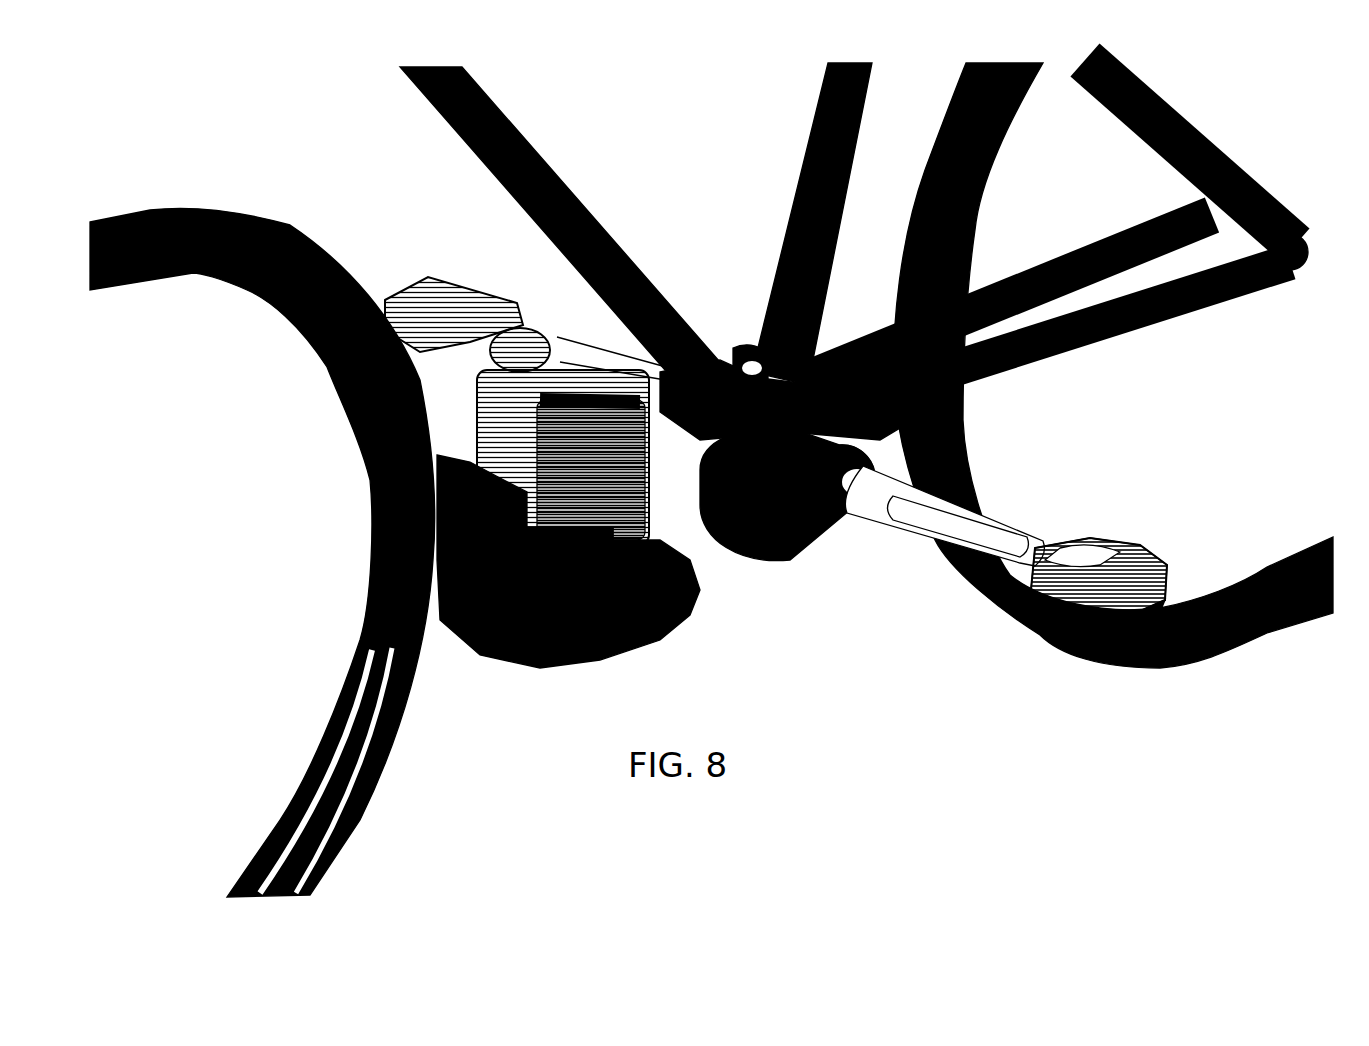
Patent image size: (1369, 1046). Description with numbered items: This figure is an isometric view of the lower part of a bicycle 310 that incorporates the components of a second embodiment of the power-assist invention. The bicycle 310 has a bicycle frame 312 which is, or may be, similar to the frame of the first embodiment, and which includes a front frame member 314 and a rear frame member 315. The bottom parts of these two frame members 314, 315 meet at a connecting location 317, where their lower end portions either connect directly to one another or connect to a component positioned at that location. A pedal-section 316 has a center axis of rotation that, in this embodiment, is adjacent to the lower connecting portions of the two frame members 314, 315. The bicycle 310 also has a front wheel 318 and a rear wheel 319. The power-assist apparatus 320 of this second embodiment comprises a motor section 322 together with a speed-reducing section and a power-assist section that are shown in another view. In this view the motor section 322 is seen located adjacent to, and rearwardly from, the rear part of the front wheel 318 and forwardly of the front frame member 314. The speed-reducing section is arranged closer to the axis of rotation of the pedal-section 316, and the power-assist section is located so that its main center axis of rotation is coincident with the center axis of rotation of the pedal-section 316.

The bicycle 310 is at (711, 467).
The bicycle frame 312 is at (532, 148).
The front frame member 314 is at (590, 213).
The rear frame member 315 is at (806, 168).
The pedal-section 316 is at (887, 527).
The connecting location 317 is at (733, 347).
The front wheel 318 is at (400, 731).
The rear wheel 319 is at (995, 610).
The power-assist apparatus 320 is at (703, 603).
The motor section 322 is at (620, 395).